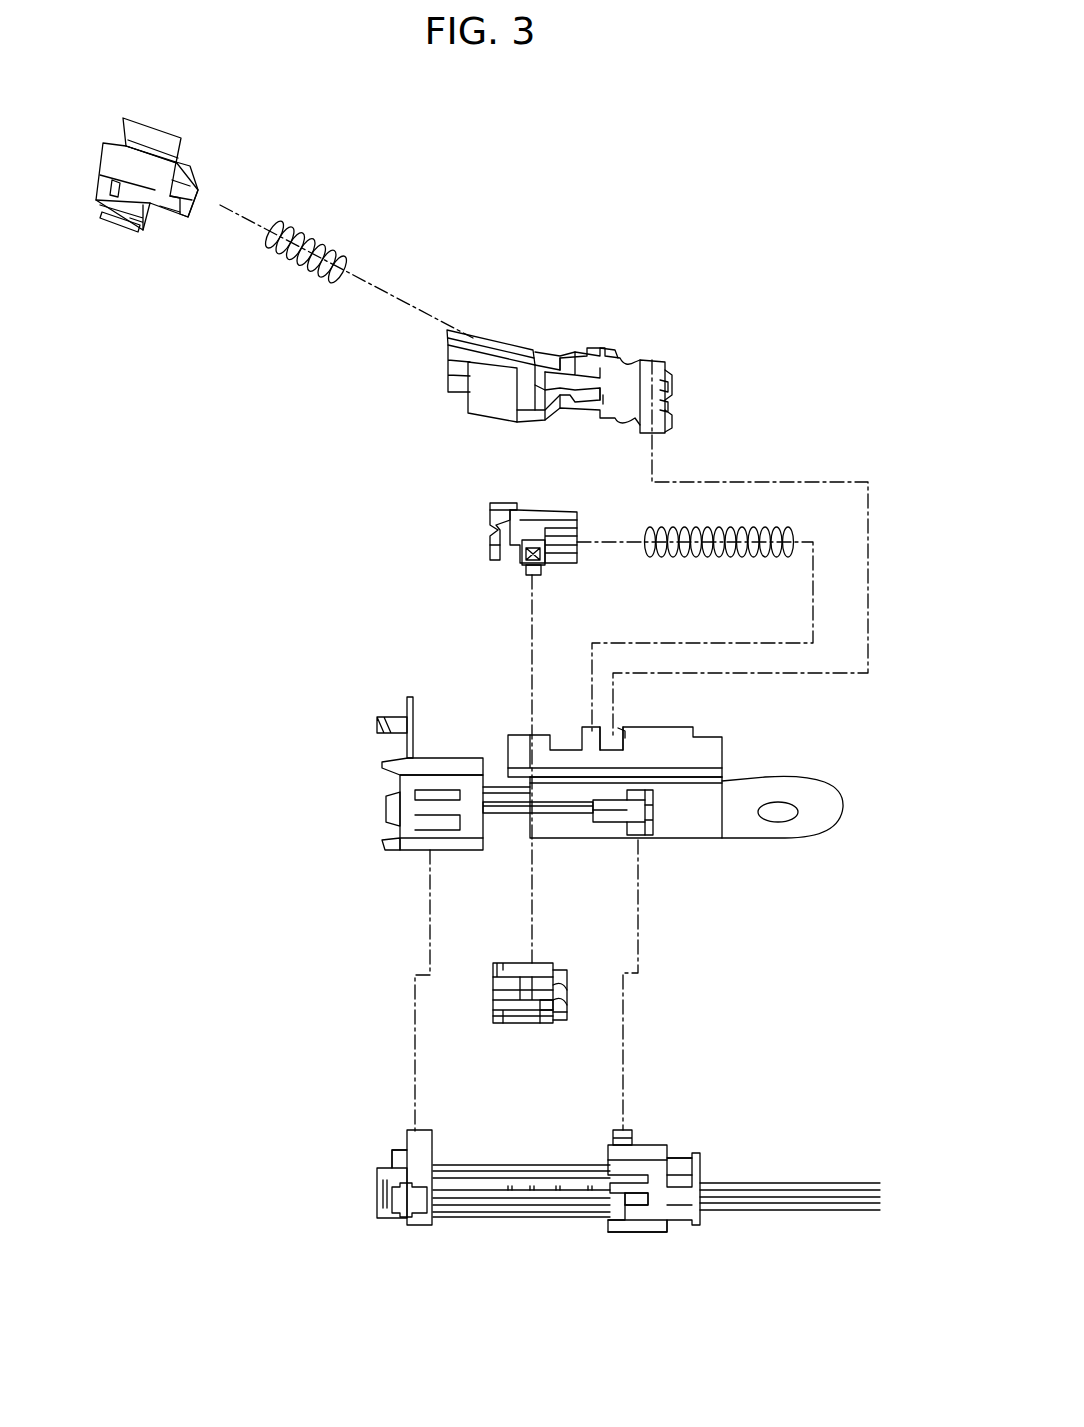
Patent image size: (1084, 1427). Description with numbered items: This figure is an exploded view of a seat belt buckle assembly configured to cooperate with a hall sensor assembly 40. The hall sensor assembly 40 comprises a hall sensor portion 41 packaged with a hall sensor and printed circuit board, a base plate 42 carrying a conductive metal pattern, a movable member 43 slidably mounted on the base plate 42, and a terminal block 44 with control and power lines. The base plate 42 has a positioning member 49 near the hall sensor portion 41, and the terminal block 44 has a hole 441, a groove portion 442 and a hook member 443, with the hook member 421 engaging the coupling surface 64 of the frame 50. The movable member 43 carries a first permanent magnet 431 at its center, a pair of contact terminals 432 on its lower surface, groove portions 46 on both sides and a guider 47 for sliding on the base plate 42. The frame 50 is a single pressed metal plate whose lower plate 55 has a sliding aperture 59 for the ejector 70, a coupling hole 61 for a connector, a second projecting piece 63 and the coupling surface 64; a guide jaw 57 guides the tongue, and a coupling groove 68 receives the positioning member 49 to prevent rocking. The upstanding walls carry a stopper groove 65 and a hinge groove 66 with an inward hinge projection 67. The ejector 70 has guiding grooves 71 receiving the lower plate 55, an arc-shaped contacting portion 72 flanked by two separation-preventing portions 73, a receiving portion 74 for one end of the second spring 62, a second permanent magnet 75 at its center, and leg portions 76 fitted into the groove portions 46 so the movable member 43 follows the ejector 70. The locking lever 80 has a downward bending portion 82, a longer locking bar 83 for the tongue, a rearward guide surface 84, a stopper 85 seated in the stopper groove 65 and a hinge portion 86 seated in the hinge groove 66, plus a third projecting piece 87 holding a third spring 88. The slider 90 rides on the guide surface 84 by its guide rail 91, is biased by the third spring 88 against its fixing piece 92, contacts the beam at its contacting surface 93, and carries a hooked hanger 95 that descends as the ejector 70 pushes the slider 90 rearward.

The hall sensor assembly 40 is at (365, 1207).
The hall sensor portion 41 is at (395, 1163).
The base plate 42 is at (504, 1222).
The movable member 43 is at (496, 972).
The terminal block 44 is at (655, 1150).
The groove portion 46 is at (516, 964).
The guider 47 is at (493, 1020).
The positioning member 49 is at (410, 1140).
The frame 50 is at (325, 715).
The lower plate 55 is at (712, 825).
The guide jaw 57 is at (400, 798).
The sliding aperture 59 is at (496, 813).
The coupling hole 61 is at (780, 818).
The second spring 62 is at (748, 556).
The second projecting piece 63 is at (645, 826).
The coupling surface 64 is at (655, 830).
The stopper groove 65 is at (562, 740).
The hinge groove 66 is at (605, 738).
The hinge projection 67 is at (640, 712).
The coupling groove 68 is at (410, 790).
The ejector 70 is at (460, 548).
The guiding groove 71 is at (500, 508).
The contacting portion 72 is at (490, 556).
The separation-preventing portion 73 is at (490, 522).
The receiving portion 74 is at (588, 538).
The second permanent magnet 75 is at (546, 560).
The leg portion 76 is at (528, 555).
The locking lever 80 is at (695, 322).
The bending portion 82 is at (452, 380).
The locking bar 83 is at (476, 412).
The guide surface 84 is at (486, 342).
The stopper 85 is at (590, 350).
The hinge portion 86 is at (646, 362).
The third projecting piece 87 is at (572, 404).
The third spring 88 is at (310, 236).
The slider 90 is at (160, 115).
The guide rail 91 is at (112, 226).
The fixing piece 92 is at (186, 182).
The contacting surface 93 is at (96, 166).
The hooked hanger 95 is at (122, 130).
The hook member 421 is at (630, 1135).
The first permanent magnet 431 is at (556, 968).
The contact terminal 432 is at (567, 1000).
The hole 441 is at (628, 1190).
The groove portion 442 is at (690, 1162).
The hook member 443 is at (660, 1228).